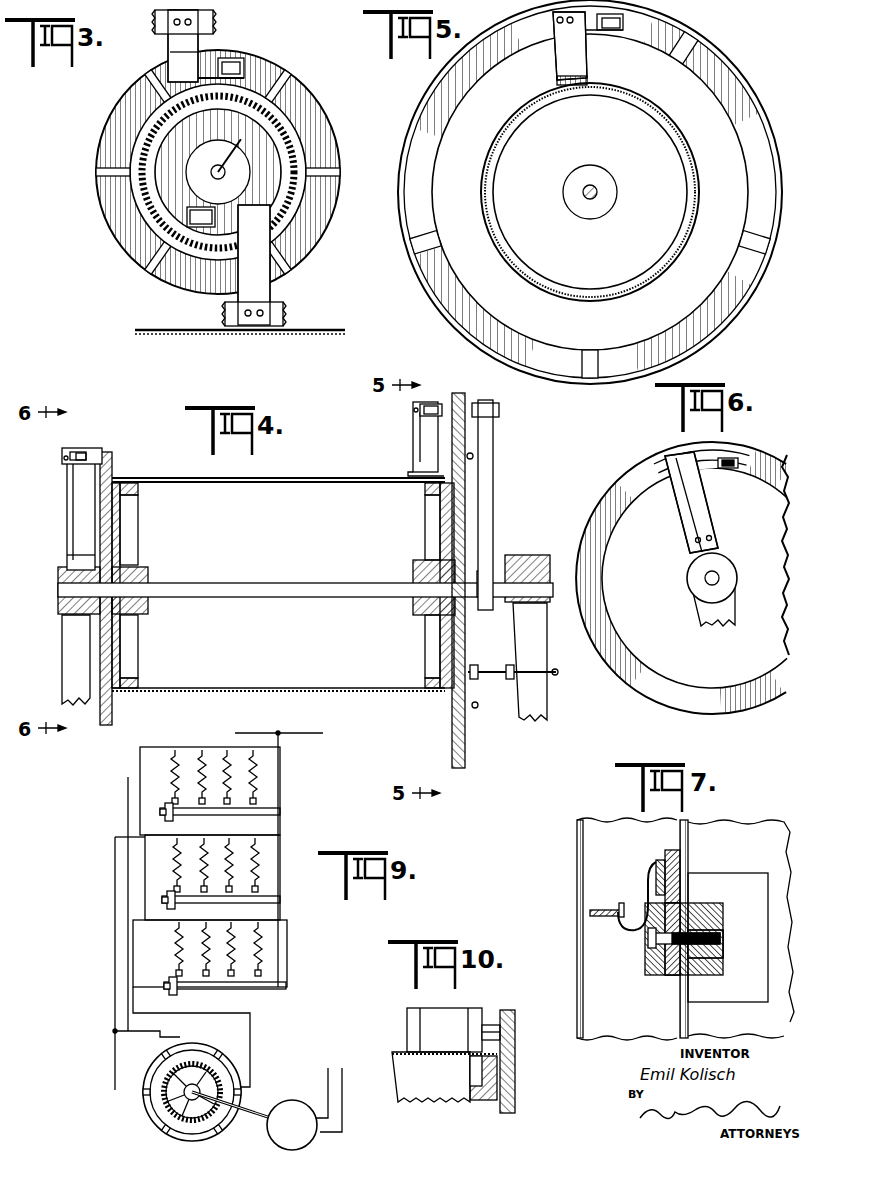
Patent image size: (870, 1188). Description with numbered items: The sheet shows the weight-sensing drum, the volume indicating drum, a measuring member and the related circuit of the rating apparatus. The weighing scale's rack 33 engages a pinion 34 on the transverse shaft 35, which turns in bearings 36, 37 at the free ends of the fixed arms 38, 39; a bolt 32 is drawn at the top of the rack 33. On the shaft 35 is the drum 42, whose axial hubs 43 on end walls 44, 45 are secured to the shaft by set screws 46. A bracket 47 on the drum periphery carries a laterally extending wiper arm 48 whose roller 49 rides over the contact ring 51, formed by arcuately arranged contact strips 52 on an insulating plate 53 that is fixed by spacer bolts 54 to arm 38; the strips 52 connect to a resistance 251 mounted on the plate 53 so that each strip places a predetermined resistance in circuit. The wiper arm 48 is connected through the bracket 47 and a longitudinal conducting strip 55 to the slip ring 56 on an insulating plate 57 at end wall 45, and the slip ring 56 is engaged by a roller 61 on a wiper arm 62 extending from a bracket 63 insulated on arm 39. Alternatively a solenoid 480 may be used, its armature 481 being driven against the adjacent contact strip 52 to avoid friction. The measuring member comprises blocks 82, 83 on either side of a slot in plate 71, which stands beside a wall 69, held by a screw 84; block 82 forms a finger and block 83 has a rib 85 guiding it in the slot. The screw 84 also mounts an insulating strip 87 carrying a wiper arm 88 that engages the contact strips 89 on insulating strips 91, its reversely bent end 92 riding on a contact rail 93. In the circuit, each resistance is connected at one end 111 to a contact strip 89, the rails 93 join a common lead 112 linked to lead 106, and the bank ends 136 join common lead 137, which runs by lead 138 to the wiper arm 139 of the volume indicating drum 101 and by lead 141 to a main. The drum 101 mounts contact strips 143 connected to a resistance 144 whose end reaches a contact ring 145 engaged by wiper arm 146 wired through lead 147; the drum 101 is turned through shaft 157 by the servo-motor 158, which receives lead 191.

In FIG. 3, the volume indicating drum 101 is at (322, 98).
In FIG. 3, the wiper arm 139 is at (206, 62).
In FIG. 9, the wiper arm 139 is at (192, 1035).
In FIG. 3, the contact strips 143 is at (284, 74).
In FIG. 9, the contact strips 143 is at (200, 1062).
In FIG. 3, the resistance 144 is at (282, 150).
In FIG. 9, the resistance 144 is at (148, 1108).
In FIG. 3, the contact ring 145 is at (265, 180).
In FIG. 9, the contact ring 145 is at (186, 1112).
In FIG. 3, the wiper arm 146 is at (220, 250).
In FIG. 9, the wiper arm 146 is at (228, 1070).
In FIG. 3, the shaft 157 is at (237, 150).
In FIG. 9, the shaft 157 is at (250, 1118).
In FIG. 5, the contact strips 52 is at (730, 64).
In FIG. 10, the contact strips 52 is at (508, 1010).
In FIG. 5, the drum 42 is at (412, 262).
In FIG. 4, the drum 42 is at (268, 686).
In FIG. 5, the plate 53 is at (705, 278).
In FIG. 4, the plate 53 is at (467, 728).
In FIG. 5, the end wall 44 is at (670, 192).
In FIG. 4, the end wall 44 is at (440, 648).
In FIG. 5, the axial hubs 43 is at (612, 200).
In FIG. 4, the axial hubs 43 is at (140, 614).
In FIG. 5, the transverse shaft 35 is at (592, 200).
In FIG. 4, the transverse shaft 35 is at (335, 582).
In FIG. 5, the bracket 47 is at (553, 66).
In FIG. 4, the bracket 47 is at (413, 430).
In FIG. 5, the wiper arm 48 is at (592, 30).
In FIG. 4, the wiper arm 48 is at (428, 404).
In FIG. 5, the roller 49 is at (622, 32).
In FIG. 4, the roller 49 is at (432, 416).
In FIG. 5, the conducting strip 55 is at (570, 86).
In FIG. 4, the conducting strip 55 is at (322, 476).
In FIG. 4, the plate 57 is at (112, 716).
In FIG. 6, the plate 57 is at (615, 545).
In FIG. 4, the set screws 46 is at (138, 560).
In FIG. 4, the end wall 45 is at (128, 652).
In FIG. 4, the bearing 37 is at (56, 580).
In FIG. 4, the bearing 36 is at (538, 555).
In FIG. 4, the pinion 34 is at (495, 570).
In FIG. 4, the bracket 63 is at (66, 522).
In FIG. 6, the bracket 63 is at (690, 528).
In FIG. 4, the slip ring 56 is at (95, 468).
In FIG. 6, the slip ring 56 is at (630, 478).
In FIG. 4, the roller 61 is at (88, 452).
In FIG. 6, the roller 61 is at (748, 468).
In FIG. 6, the wiper arm 62 is at (712, 466).
In FIG. 4, the fixed arm 39 is at (62, 641).
In FIG. 6, the fixed arm 39 is at (696, 616).
In FIG. 4, the contact ring 51 is at (460, 378).
In FIG. 4, the rack 33 is at (493, 482).
In FIG. 4, the bolt 32 is at (499, 410).
In FIG. 4, the resistance 251 is at (474, 456).
In FIG. 4, the fixed arm 38 is at (538, 688).
In FIG. 4, the spacer bolts 54 is at (492, 670).
In FIG. 9, the lead 106 is at (300, 738).
In FIG. 9, the ends 136 is at (200, 744).
In FIG. 9, the common lead 137 is at (140, 770).
In FIG. 9, the resistance connection 111 is at (258, 790).
In FIG. 9, the contact rail 93 is at (265, 810).
In FIG. 7, the contact rail 93 is at (580, 905).
In FIG. 9, the contact strips 89 is at (262, 892).
In FIG. 7, the contact strips 89 is at (650, 866).
In FIG. 9, the common lead 112 is at (282, 950).
In FIG. 9, the wiper arm 88 is at (168, 984).
In FIG. 7, the wiper arm 88 is at (642, 882).
In FIG. 9, the lead 138 is at (160, 1038).
In FIG. 9, the lead 147 is at (250, 1030).
In FIG. 9, the lead 141 is at (115, 1076).
In FIG. 9, the servo-motor 158 is at (305, 1140).
In FIG. 9, the lead 191 is at (328, 1084).
In FIG. 7, the panel 69 is at (580, 878).
In FIG. 7, the plate 71 is at (688, 862).
In FIG. 7, the insulating strips 91 is at (668, 848).
In FIG. 7, the block 82 is at (723, 910).
In FIG. 7, the rib 85 is at (723, 958).
In FIG. 7, the screw 84 is at (655, 940).
In FIG. 7, the reversely bent end 92 is at (648, 938).
In FIG. 7, the insulating strip 87 is at (648, 970).
In FIG. 7, the block 83 is at (672, 975).
In FIG. 10, the solenoid 480 is at (430, 1008).
In FIG. 10, the armature 481 is at (490, 1015).